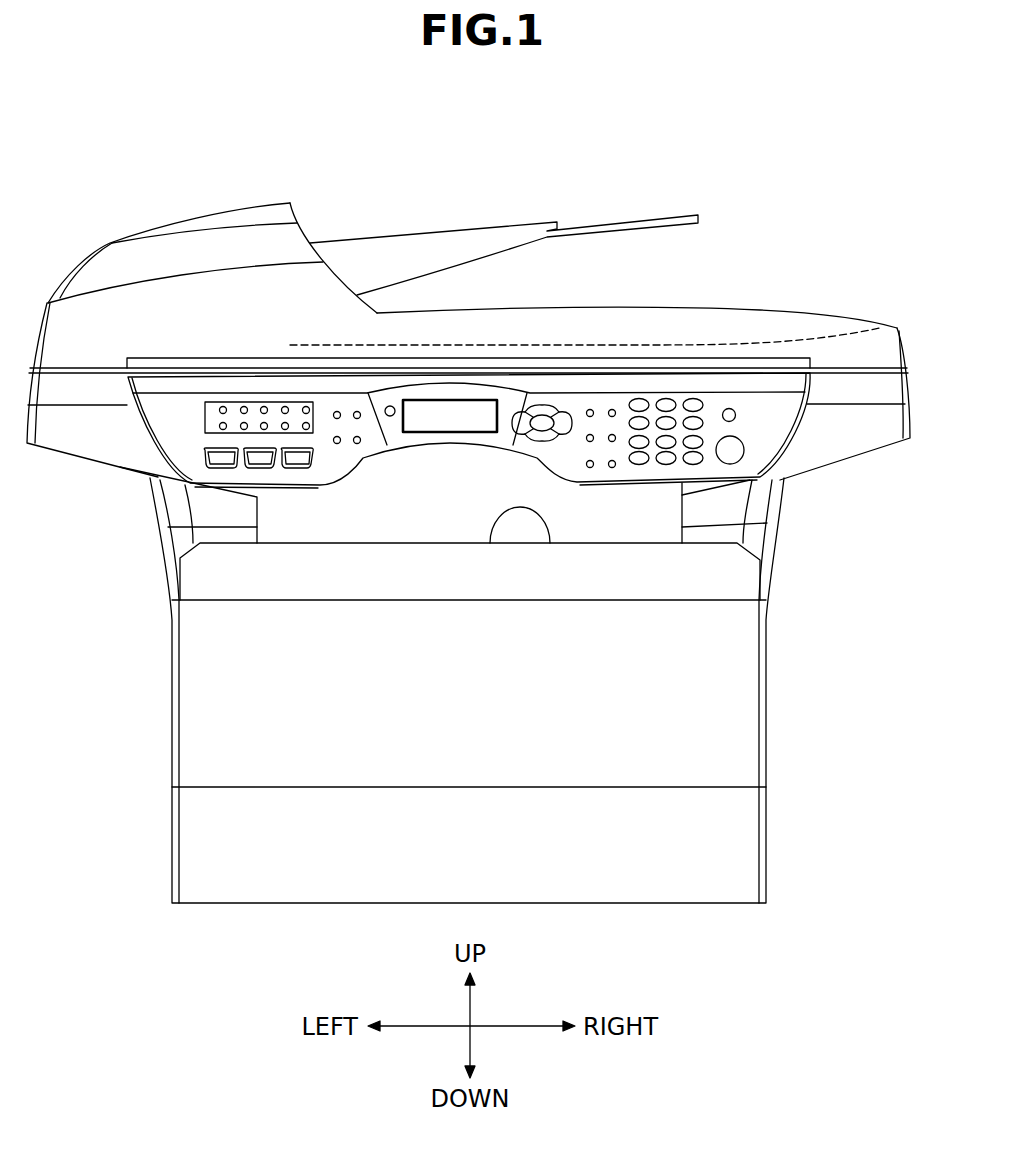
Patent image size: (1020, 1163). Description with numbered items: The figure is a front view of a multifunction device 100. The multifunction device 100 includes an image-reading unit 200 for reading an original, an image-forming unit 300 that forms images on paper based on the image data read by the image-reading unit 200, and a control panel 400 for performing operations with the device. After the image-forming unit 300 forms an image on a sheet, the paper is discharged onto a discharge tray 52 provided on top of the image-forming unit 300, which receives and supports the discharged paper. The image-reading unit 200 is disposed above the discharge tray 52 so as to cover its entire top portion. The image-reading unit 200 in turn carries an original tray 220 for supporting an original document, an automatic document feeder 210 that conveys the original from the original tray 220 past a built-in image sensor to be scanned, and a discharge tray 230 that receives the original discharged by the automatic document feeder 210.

The multifunction device 100 is at (651, 174).
The image-reading unit 200 is at (790, 292).
The automatic document feeder (ADF) 210 is at (402, 168).
The original tray 220 is at (527, 222).
The discharge tray 230 is at (683, 308).
The image-forming unit 300 is at (772, 662).
The control panel 400 is at (747, 433).
The discharge tray 52 is at (550, 543).